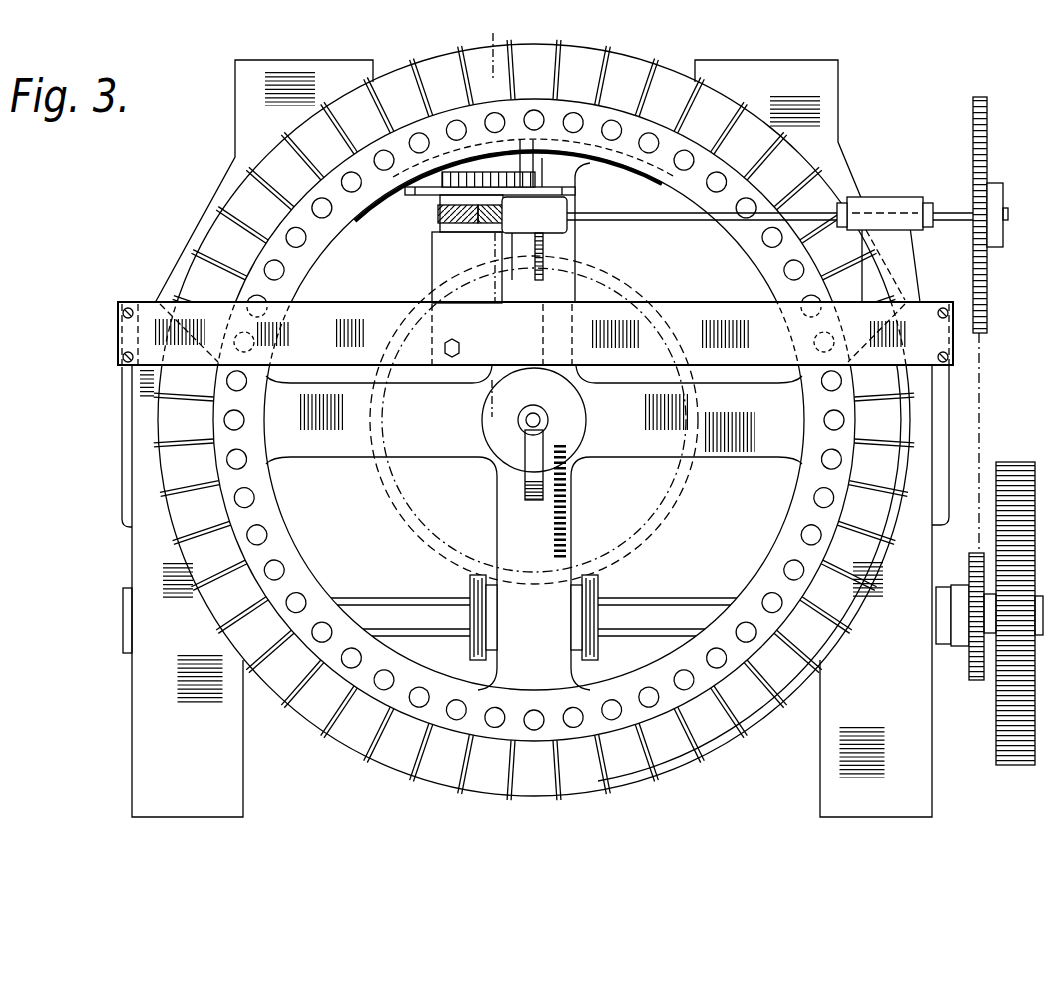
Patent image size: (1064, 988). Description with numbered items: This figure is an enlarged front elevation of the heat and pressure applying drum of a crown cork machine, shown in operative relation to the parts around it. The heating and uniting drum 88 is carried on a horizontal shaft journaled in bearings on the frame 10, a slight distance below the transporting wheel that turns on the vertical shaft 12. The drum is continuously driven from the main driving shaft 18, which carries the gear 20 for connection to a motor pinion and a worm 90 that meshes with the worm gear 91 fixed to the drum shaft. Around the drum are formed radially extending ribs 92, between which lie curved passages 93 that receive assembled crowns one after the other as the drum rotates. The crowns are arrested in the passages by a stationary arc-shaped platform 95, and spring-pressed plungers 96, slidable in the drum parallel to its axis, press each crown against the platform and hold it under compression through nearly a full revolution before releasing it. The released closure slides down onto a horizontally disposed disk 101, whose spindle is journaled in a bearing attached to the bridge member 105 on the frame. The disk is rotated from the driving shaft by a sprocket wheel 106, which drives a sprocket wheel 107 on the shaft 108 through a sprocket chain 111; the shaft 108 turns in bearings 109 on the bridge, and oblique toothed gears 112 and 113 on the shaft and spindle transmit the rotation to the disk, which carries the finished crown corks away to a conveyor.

The frame 10 is at (135, 688).
The shaft 12 is at (482, 51).
The main driving shaft 18 is at (668, 603).
The gear 20 is at (1014, 462).
The heating and uniting drum 88 is at (668, 72).
The worm 90 is at (597, 592).
The worm gear 91 is at (393, 513).
The radially extending ribs 92 is at (430, 105).
The curved passages 93 is at (534, 400).
The stationary arc-shaped platform 95 is at (618, 168).
The spring-pressed plungers 96 is at (650, 141).
The disk 101 is at (512, 158).
The bridge member 105 is at (693, 303).
The sprocket wheel 106 is at (969, 672).
The sprocket wheel 107 is at (973, 160).
The shaft 108 is at (953, 214).
The bearings 109 is at (568, 230).
The sprocket chain 111 is at (985, 367).
The oblique toothed gear 112 is at (478, 233).
The oblique toothed gear 113 is at (438, 218).